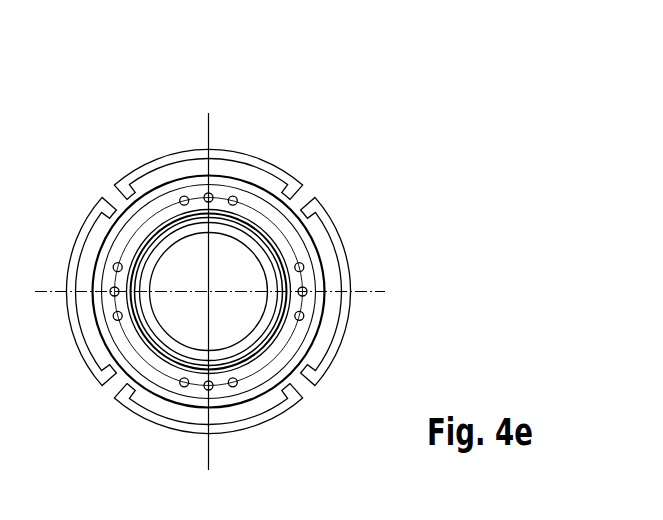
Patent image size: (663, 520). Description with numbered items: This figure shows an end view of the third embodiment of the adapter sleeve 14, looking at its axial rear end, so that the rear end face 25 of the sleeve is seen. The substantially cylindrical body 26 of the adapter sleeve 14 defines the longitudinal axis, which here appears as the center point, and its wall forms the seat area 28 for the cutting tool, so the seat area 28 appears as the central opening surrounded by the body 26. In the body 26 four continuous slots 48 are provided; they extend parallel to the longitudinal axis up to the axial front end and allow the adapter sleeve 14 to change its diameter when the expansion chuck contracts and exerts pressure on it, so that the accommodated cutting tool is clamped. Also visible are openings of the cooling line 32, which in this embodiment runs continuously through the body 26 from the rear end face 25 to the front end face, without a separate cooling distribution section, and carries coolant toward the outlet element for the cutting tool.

The adapter sleeve 14 is at (229, 133).
The cylindrical body 26 is at (280, 171).
The continuous slots 48 is at (310, 190).
The rear end face 25 is at (312, 254).
The cooling line 32 is at (180, 192).
The seat area 28 is at (168, 268).